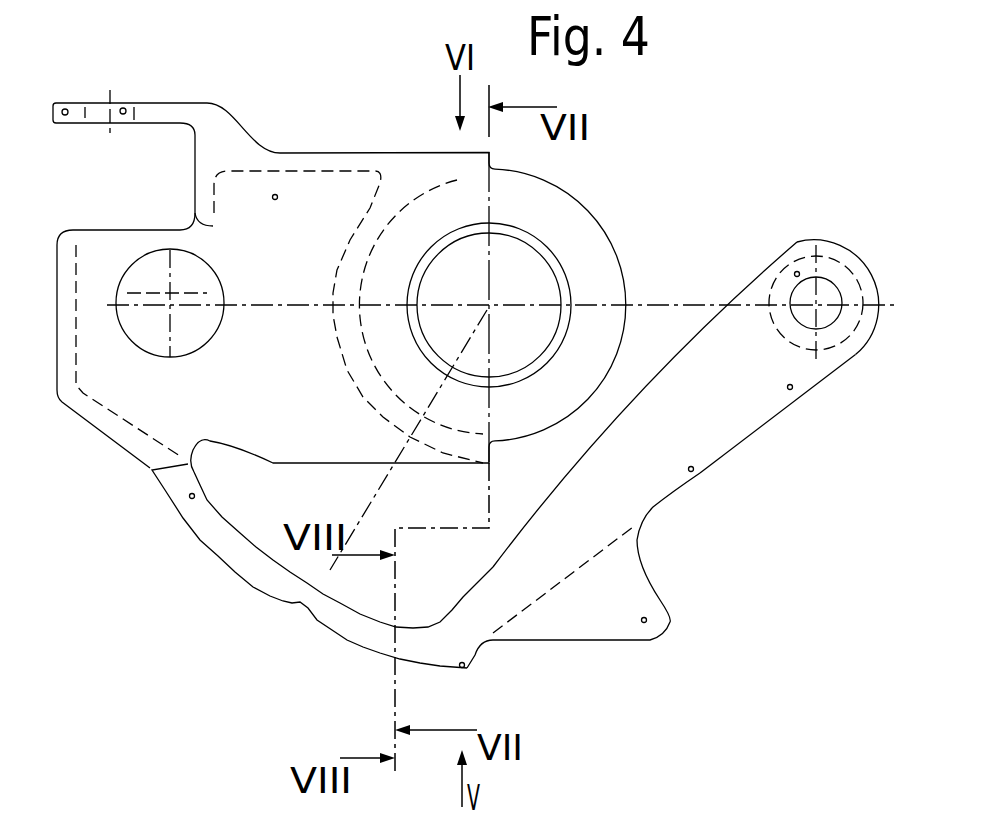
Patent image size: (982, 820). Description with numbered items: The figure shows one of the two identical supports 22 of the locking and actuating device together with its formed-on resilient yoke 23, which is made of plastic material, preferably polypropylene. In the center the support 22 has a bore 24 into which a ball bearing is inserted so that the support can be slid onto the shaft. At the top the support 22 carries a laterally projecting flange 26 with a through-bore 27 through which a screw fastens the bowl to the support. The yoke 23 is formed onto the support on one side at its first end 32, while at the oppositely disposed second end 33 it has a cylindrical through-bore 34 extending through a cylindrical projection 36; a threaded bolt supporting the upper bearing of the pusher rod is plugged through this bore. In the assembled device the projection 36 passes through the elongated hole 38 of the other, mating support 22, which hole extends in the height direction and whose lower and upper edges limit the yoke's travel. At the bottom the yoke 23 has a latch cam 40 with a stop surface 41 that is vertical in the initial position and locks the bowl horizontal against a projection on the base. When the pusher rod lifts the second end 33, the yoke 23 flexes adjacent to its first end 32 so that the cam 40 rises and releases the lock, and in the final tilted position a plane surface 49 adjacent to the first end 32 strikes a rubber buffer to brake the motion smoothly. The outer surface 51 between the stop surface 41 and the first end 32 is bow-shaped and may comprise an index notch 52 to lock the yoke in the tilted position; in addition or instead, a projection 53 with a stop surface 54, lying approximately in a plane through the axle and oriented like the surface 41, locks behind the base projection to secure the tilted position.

The support 22 is at (276, 195).
The yoke 23 is at (693, 471).
The bore 24 is at (420, 311).
The flange 26 is at (67, 109).
The through-bore 27 is at (137, 98).
The first end 32 is at (190, 497).
The second end 33 is at (793, 389).
The through-bore 34 is at (828, 290).
The cylindrical projection 36 is at (799, 270).
The elongated hole 38 is at (142, 258).
The latch cam 40 is at (466, 668).
The stop surface 41 is at (477, 664).
The plane surface 49 is at (90, 428).
The outer surface 51 is at (244, 595).
The index notch 52 is at (330, 572).
The projection 53 is at (646, 622).
The stop surface 54 is at (672, 615).